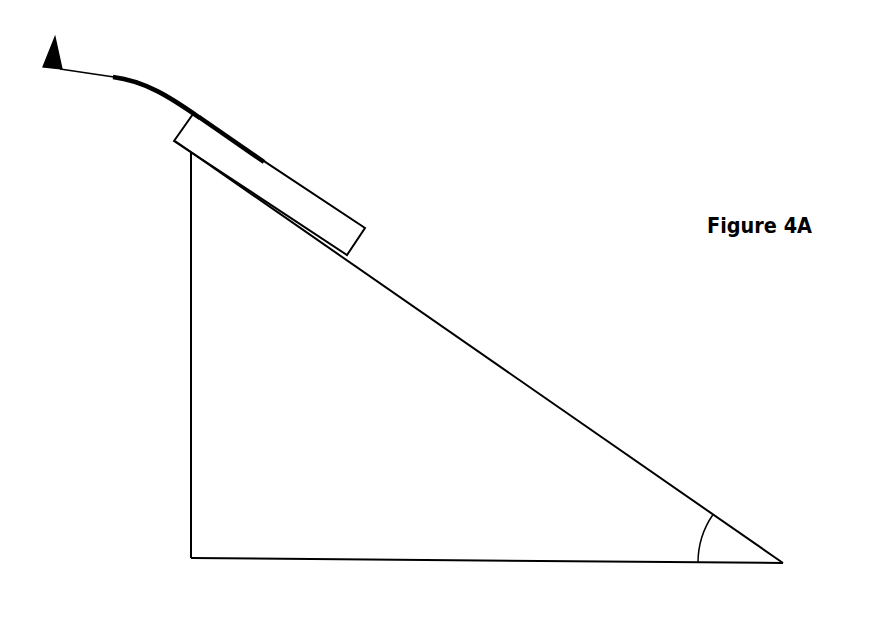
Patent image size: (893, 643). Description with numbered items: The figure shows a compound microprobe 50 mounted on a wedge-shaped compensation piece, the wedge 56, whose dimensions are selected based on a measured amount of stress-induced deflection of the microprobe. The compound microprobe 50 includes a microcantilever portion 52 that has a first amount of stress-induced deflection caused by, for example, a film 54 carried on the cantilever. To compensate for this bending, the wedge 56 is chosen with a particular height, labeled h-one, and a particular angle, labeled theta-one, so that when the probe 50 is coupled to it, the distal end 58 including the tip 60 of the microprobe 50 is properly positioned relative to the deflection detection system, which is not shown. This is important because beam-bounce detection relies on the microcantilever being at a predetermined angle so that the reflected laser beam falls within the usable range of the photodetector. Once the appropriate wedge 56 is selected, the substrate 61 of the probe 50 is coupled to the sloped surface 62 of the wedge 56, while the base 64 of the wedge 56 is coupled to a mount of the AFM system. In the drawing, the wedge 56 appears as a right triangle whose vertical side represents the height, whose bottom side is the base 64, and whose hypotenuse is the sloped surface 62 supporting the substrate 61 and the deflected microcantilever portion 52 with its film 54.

The compound microprobe 50 is at (274, 70).
The microcantilever portion 52 is at (135, 53).
The film 54 is at (197, 112).
The wedge 56 is at (640, 414).
The distal end 58 is at (58, 70).
The tip 60 is at (60, 42).
The substrate 61 is at (303, 187).
The sloped surface 62 is at (433, 317).
The base 64 is at (565, 563).